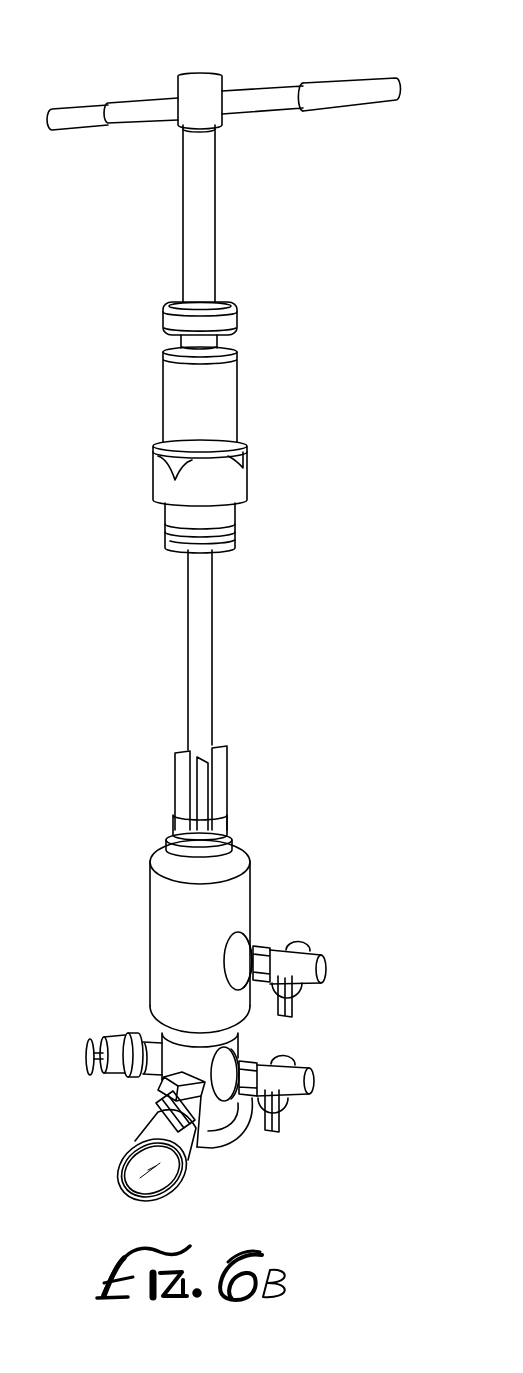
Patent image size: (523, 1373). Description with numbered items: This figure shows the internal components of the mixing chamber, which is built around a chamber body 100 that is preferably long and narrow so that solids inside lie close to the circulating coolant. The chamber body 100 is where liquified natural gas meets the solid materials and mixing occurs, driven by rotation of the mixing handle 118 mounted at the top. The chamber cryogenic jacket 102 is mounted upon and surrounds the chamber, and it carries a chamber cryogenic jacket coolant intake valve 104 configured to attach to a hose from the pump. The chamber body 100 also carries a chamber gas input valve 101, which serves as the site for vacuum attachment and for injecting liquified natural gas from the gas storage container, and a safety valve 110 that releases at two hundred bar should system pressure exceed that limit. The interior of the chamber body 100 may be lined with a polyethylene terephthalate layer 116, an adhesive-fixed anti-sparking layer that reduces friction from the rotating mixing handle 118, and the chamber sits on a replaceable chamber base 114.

The chamber body 100 is at (211, 992).
The chamber gas input valve 101 is at (313, 1082).
The chamber cryogenic jacket 102 is at (177, 923).
The chamber cryogenic jacket coolant intake valve 104 is at (327, 968).
The safety valve 110 is at (110, 1037).
The replaceable chamber base 114 is at (230, 1147).
The polyethylene terephthalate layer 116 is at (185, 837).
The mixing handle 118 is at (197, 72).